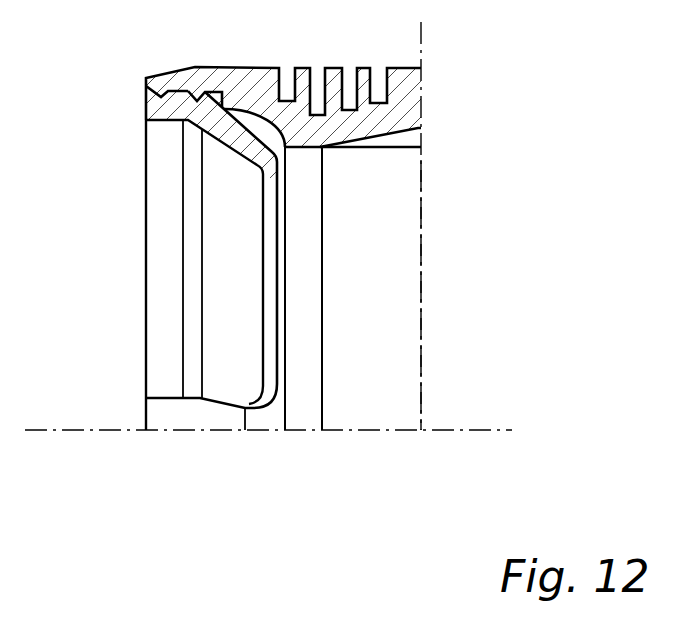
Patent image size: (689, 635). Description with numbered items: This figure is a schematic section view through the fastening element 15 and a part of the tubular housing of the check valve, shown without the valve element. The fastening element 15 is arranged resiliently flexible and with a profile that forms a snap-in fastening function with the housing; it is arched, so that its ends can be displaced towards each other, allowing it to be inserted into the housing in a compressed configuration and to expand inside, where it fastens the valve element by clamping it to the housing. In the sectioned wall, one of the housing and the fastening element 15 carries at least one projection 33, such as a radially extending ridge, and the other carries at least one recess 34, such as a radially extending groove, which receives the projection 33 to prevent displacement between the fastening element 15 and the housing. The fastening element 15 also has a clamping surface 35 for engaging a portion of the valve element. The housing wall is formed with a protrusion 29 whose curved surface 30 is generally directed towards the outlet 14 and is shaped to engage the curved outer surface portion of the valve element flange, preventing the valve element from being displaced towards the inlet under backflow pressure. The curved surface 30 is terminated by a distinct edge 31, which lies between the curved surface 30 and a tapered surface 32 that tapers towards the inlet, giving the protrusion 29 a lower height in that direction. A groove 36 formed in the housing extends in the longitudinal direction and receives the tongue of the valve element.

The outlet 14 is at (148, 357).
The fastening element 15 is at (150, 107).
The protrusion 29 is at (307, 422).
The curved surface 30 is at (272, 118).
The distinct edge 31 is at (286, 282).
The tapered surface 32 is at (398, 357).
The projection 33 is at (184, 70).
The recess 34 is at (200, 98).
The clamping surface 35 is at (243, 128).
The groove 36 is at (420, 131).